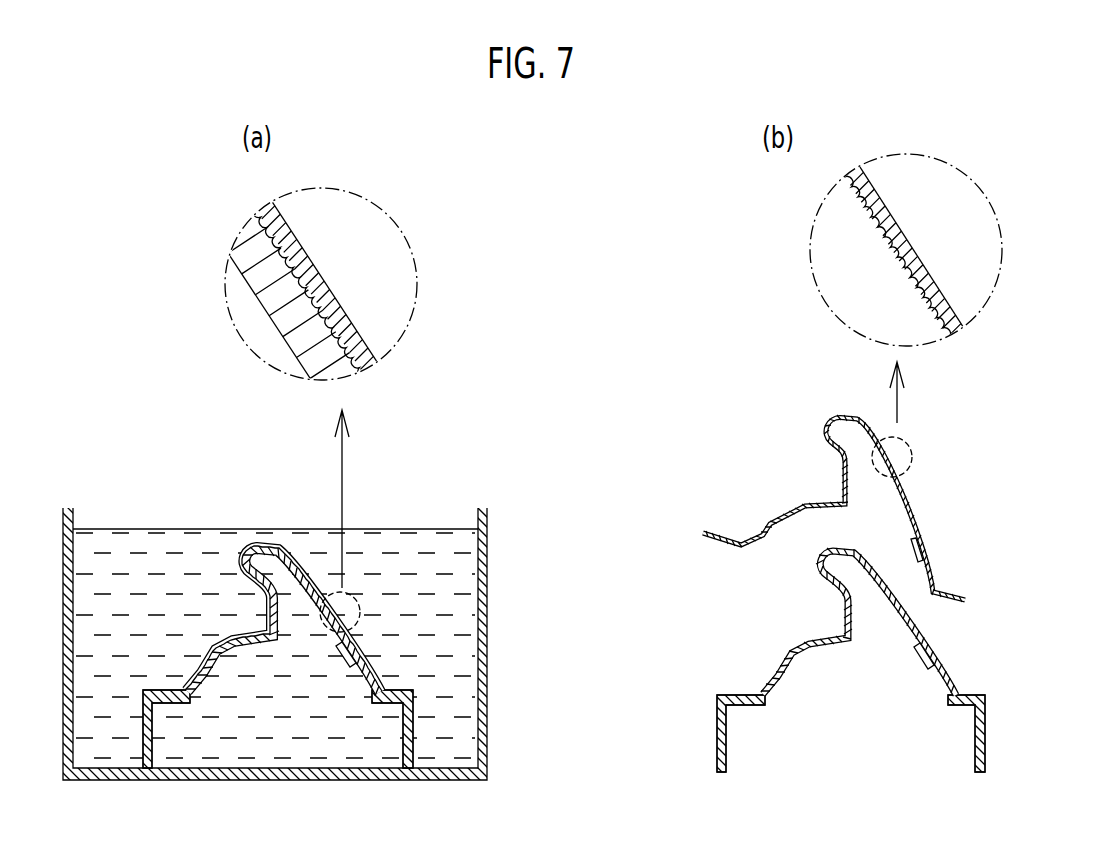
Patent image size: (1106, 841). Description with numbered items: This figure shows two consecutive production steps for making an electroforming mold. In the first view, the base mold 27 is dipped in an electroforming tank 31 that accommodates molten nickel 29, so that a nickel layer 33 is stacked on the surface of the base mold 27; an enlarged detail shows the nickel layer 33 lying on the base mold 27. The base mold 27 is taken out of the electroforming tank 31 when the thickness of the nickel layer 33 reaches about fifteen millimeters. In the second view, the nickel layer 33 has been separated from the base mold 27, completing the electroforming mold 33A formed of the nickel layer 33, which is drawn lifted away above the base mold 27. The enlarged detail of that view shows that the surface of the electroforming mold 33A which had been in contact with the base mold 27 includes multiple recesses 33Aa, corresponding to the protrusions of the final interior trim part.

The base mold 27 is at (275, 538).
The molten nickel 29 is at (162, 547).
The electroforming tank 31 is at (487, 618).
The nickel layer 33 is at (247, 542).
The electroforming mold 33A is at (916, 485).
The recesses 33Aa is at (903, 265).